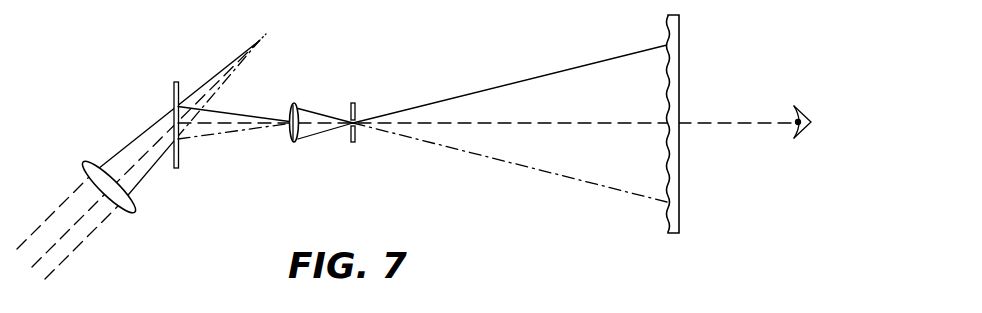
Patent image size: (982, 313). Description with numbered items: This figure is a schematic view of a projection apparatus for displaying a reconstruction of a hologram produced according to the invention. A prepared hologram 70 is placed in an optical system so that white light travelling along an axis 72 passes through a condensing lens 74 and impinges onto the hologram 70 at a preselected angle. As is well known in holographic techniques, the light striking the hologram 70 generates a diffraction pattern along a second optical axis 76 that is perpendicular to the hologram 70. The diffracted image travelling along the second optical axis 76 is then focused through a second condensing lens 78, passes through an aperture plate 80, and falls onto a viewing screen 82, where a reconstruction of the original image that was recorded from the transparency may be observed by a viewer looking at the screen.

The hologram 70 is at (174, 92).
The axis 72 is at (53, 248).
The condensing lens 74 is at (84, 160).
The second optical axis 76 is at (228, 122).
The second condensing lens 78 is at (297, 143).
The aperture plate 80 is at (356, 109).
The viewing screen 82 is at (680, 62).